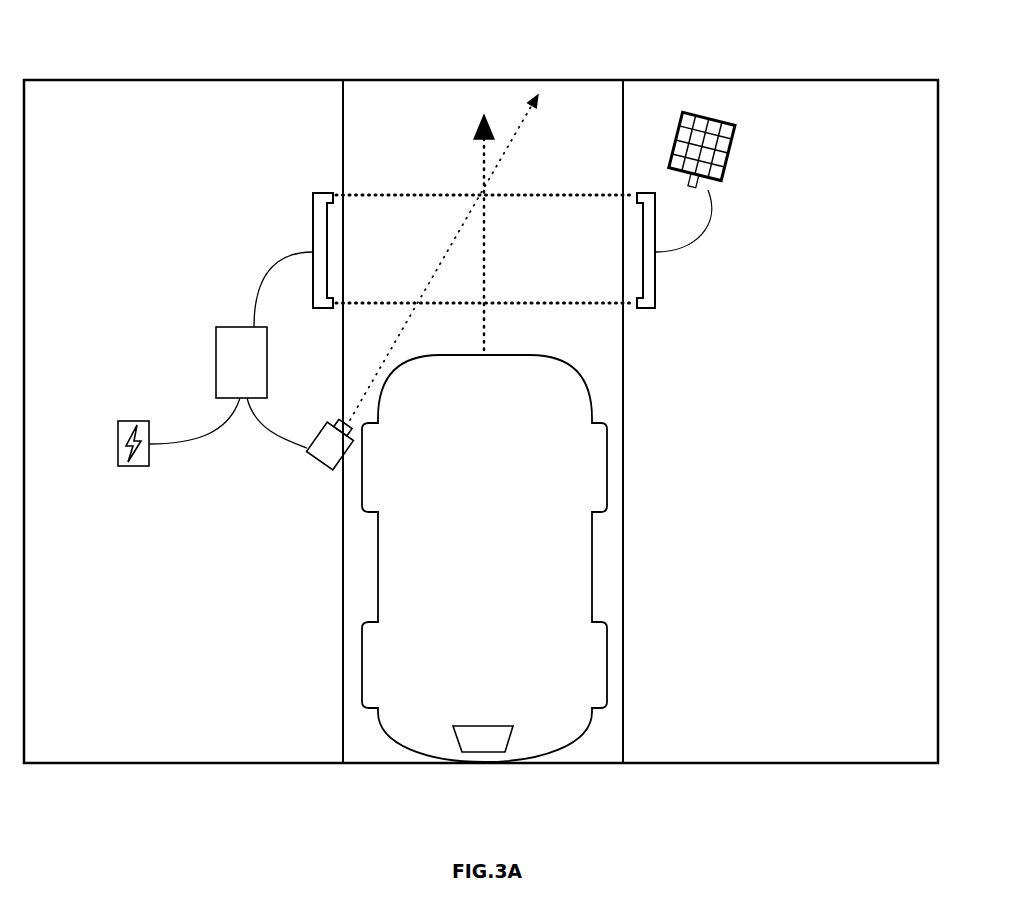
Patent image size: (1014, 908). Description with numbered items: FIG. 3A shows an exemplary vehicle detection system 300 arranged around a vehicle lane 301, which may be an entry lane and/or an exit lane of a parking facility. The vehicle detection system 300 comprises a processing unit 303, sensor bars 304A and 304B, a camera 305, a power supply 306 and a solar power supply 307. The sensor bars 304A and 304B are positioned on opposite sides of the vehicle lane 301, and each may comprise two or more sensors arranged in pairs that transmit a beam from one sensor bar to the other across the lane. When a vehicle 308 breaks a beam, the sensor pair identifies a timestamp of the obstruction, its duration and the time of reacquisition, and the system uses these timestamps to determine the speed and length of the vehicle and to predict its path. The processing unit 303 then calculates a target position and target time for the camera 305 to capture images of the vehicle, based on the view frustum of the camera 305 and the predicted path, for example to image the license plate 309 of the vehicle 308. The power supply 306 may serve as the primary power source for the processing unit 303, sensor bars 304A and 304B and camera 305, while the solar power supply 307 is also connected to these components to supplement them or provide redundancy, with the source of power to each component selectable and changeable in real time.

The vehicle detection system 300 is at (500, 48).
The vehicle lane 301 is at (598, 748).
The processing unit 303 is at (215, 366).
The sensor bar 304A is at (312, 241).
The sensor bar 304B is at (657, 276).
The camera 305 is at (325, 472).
The power supply 306 is at (135, 469).
The solar power supply 307 is at (738, 132).
The vehicle 308 is at (500, 607).
The license plate 309 is at (484, 716).